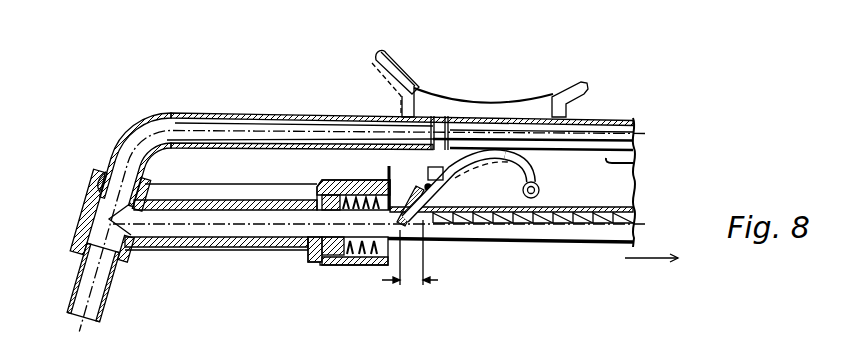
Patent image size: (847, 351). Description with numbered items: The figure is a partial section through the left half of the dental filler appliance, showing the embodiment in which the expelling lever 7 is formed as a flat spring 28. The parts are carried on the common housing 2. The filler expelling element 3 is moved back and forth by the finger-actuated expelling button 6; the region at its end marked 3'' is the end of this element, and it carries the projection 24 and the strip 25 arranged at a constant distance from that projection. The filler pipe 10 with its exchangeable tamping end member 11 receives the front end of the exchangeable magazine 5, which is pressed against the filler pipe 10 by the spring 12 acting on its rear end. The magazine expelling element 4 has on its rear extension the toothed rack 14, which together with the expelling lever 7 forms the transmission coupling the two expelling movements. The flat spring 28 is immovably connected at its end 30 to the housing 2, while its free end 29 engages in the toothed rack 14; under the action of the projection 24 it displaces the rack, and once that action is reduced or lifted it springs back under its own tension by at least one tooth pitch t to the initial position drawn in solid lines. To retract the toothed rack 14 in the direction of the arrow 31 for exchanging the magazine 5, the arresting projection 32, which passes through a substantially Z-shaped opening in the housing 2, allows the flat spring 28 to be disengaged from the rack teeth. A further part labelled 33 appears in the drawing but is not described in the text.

The housing 2 is at (620, 183).
The filler expelling element 3 is at (362, 196).
The tube sealing flange 3'' is at (82, 155).
The magazine expelling element 4 is at (343, 222).
The magazine 5 is at (218, 252).
The expelling button 6 is at (428, 90).
The expelling lever 7 is at (481, 214).
The filler pipe 10 is at (112, 194).
The tamping end member 11 is at (77, 282).
The spring 12 is at (368, 262).
The toothed rack 14 is at (553, 226).
The projection 24 is at (507, 152).
The strip 25 is at (633, 163).
The flat spring 28 is at (468, 155).
The free end 29 is at (387, 163).
The end 30 is at (545, 190).
The arrow 31 is at (648, 260).
The arresting projection 32 is at (440, 190).
The bracket 33 is at (428, 172).
The tooth pitch t is at (410, 256).